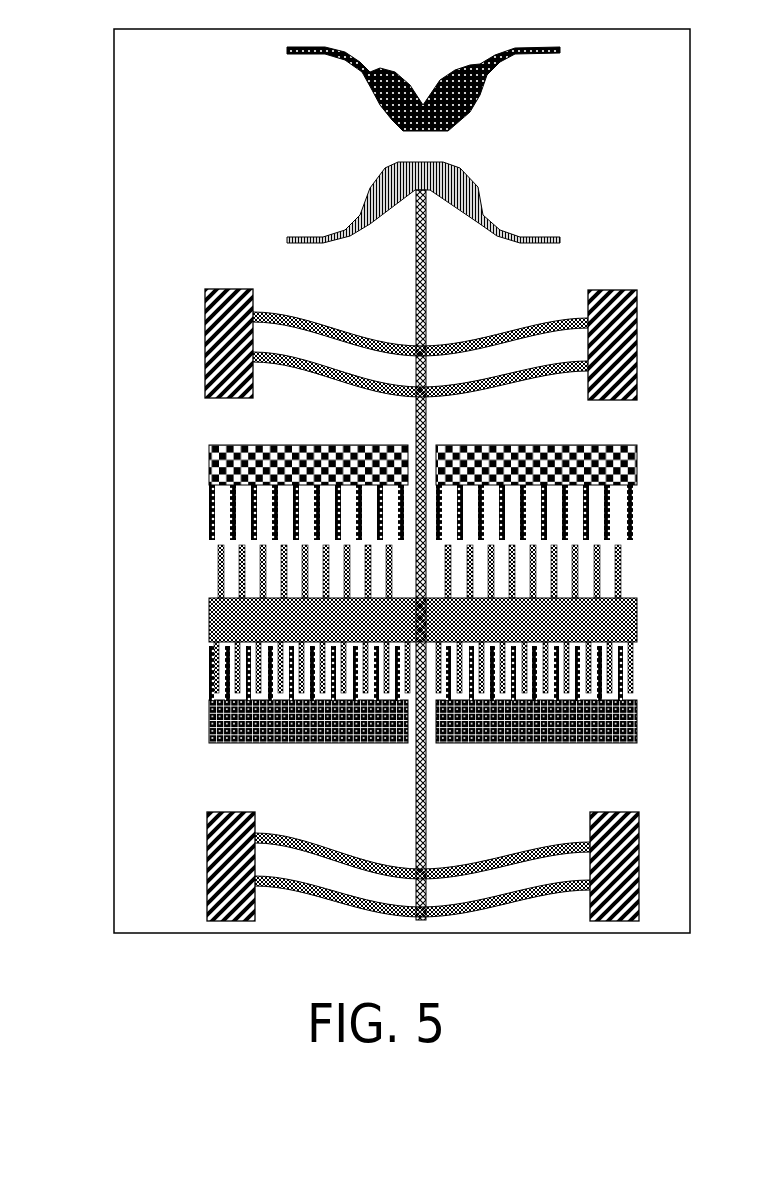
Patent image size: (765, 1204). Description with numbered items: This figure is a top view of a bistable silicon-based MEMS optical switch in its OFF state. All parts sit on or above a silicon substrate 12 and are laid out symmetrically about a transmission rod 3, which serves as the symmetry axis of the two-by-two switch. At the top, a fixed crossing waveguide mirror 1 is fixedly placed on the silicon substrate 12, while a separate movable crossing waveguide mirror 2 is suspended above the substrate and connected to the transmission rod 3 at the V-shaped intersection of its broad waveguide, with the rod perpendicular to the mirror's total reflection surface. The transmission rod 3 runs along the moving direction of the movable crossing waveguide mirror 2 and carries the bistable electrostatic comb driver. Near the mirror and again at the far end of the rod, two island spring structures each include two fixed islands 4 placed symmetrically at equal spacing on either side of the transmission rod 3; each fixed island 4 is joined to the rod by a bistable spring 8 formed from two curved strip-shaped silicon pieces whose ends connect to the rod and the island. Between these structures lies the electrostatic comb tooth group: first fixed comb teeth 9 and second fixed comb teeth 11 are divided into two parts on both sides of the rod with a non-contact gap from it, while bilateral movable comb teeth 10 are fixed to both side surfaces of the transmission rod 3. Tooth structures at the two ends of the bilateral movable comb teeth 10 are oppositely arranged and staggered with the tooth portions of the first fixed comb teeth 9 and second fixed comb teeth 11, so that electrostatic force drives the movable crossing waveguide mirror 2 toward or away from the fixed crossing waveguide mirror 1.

The fixed crossing waveguide mirror 1 is at (368, 92).
The movable crossing waveguide mirror 2 is at (368, 200).
The transmission rod 3 is at (415, 256).
The fixed island 4 is at (218, 348).
The bistable spring 8 is at (348, 378).
The first fixed comb teeth 9 is at (210, 470).
The bilateral movable comb teeth 10 is at (208, 620).
The second fixed comb teeth 11 is at (208, 725).
The silicon substrate 12 is at (153, 145).